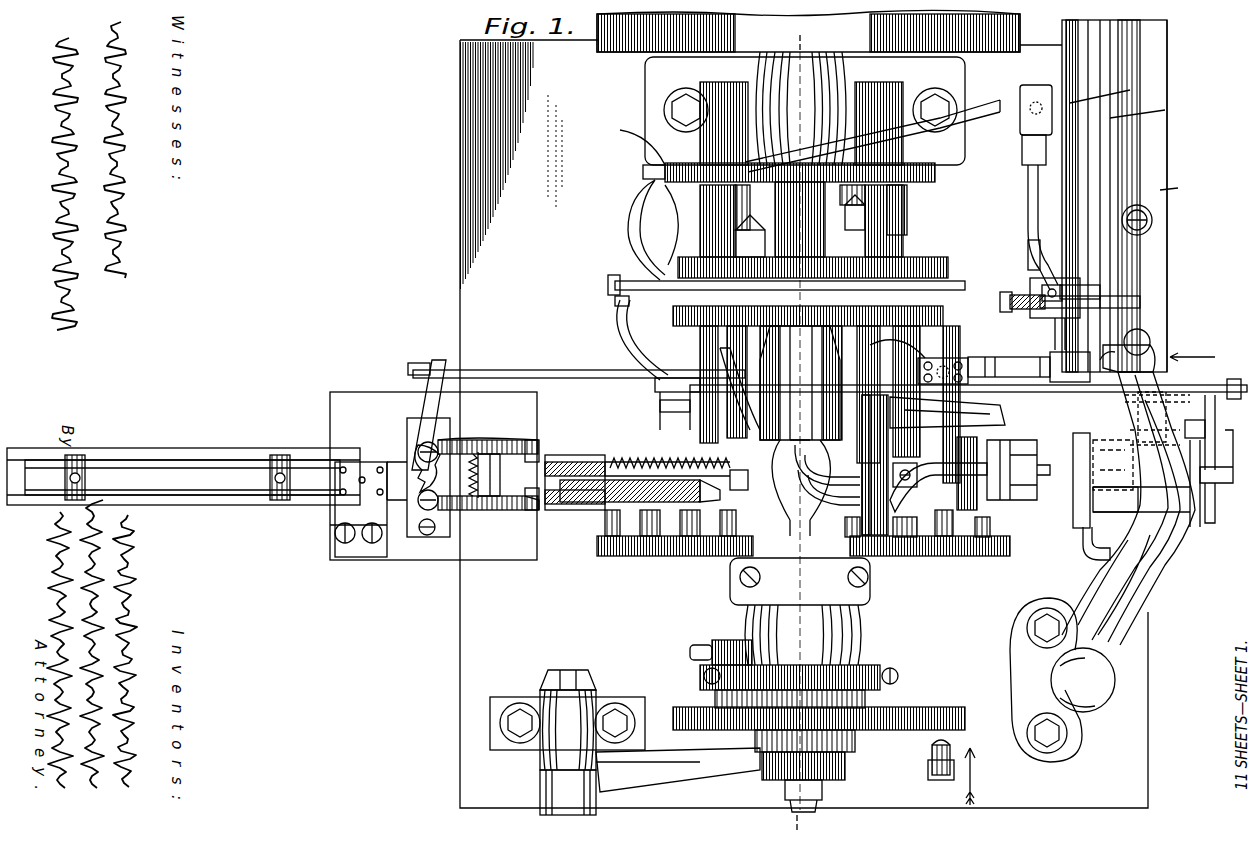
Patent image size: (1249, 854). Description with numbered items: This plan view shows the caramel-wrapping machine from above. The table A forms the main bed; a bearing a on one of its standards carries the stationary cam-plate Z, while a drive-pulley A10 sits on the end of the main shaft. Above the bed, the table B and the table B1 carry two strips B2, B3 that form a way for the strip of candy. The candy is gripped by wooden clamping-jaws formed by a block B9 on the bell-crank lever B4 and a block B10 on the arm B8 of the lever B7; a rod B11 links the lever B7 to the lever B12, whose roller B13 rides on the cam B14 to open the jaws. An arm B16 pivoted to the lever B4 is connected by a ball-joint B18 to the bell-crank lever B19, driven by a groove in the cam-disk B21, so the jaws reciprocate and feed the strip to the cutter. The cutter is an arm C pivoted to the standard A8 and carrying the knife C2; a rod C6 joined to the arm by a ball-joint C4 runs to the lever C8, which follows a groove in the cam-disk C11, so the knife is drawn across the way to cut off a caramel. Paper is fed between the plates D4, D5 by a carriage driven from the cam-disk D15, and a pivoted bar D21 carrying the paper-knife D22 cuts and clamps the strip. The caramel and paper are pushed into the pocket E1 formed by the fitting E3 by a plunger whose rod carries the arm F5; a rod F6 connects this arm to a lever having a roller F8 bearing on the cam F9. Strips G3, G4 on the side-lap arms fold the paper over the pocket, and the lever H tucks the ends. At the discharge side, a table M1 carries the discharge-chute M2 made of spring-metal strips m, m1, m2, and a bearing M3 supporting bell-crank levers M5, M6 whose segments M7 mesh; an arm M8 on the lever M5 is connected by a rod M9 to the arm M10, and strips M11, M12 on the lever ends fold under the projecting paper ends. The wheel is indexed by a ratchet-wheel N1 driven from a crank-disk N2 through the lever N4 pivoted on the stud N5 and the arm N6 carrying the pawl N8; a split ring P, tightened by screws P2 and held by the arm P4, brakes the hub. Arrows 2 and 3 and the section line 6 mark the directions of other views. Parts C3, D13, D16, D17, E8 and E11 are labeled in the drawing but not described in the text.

The table A is at (813, 414).
The drive-pulley A10 is at (808, 31).
The upright or standard A8 is at (1070, 713).
The table B is at (1100, 147).
The table B1 is at (1153, 205).
The strip B2 is at (1110, 88).
The strip B3 is at (1147, 108).
The bell-crank lever B4 is at (1040, 285).
The lever B7 is at (1000, 292).
The arm B8 is at (1093, 303).
The block B9 is at (1070, 334).
The block B10 is at (1100, 292).
The rod B11 is at (660, 270).
The lever B12 is at (640, 205).
The roller B13 is at (645, 168).
The cam B14 is at (632, 141).
The arm B16 is at (1020, 200).
The ball-joint B18 is at (1018, 98).
The bell-crank lever B19 is at (860, 138).
The cam-disk B21 is at (770, 165).
The arm C is at (1120, 570).
The knife C2 is at (1168, 412).
The lever pin C3 is at (1205, 428).
The ball-joint C4 is at (1150, 345).
The rod C6 is at (1010, 357).
The lever C8 is at (905, 345).
The cam-disk C11 is at (660, 325).
The plate D4 is at (1198, 515).
The plate D5 is at (1125, 512).
The nut D13 is at (765, 240).
The cam-disk D15 is at (915, 262).
The nut D16 is at (820, 219).
The disc plate D17 is at (900, 225).
The pivoted frame or bar D21 is at (1077, 549).
The knife D22 is at (1075, 500).
The pocket E1 is at (690, 510).
The fitting E3 is at (930, 420).
The block E8 is at (660, 406).
The bracket E11 is at (665, 395).
The arm F5 is at (1205, 450).
The rod F6 is at (968, 381).
The roller F8 is at (816, 394).
The cam F9 is at (820, 345).
The strip G3 is at (938, 468).
The strip G4 is at (1005, 445).
The lever H is at (912, 462).
The table M1 is at (433, 488).
The discharge-chute M2 is at (178, 462).
The bearing M3 is at (440, 525).
The bell-crank lever M5 is at (475, 440).
The bell-crank lever M6 is at (510, 510).
The segment M7 is at (410, 452).
The arm M8 is at (430, 372).
The rod M9 is at (570, 358).
The arm M10 is at (720, 420).
The strip M11 is at (539, 440).
The strip M12 is at (539, 500).
The metal strip m is at (210, 460).
The metal strip m1 is at (182, 477).
The metal strip m2 is at (225, 495).
The ratchet-wheel N1 is at (900, 707).
The crank-disk N2 is at (840, 775).
The lever N4 is at (720, 780).
The projecting stud N5 is at (580, 720).
The arm N6 is at (826, 739).
The spring-impelled pawl N8 is at (950, 745).
The split ring P is at (875, 665).
The screws P2 is at (705, 676).
The arm P4 is at (720, 640).
The cam-plate Z is at (852, 487).
The bearing a is at (850, 630).
The arrow 2 is at (978, 776).
The arrow 3 is at (1192, 350).
The section line 6 is at (785, 423).